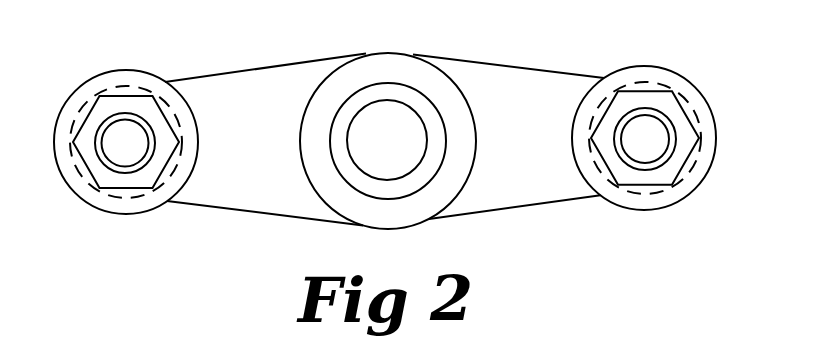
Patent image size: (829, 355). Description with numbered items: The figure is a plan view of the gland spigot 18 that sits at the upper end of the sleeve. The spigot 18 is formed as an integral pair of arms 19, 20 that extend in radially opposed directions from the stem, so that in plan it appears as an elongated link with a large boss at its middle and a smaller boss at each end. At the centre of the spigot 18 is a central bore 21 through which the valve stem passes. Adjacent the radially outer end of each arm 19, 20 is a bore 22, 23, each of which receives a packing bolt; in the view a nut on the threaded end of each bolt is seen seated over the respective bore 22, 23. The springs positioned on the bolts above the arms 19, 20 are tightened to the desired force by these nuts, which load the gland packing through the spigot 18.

The gland spigot 18 is at (528, 56).
The arm 19 is at (543, 180).
The arm 20 is at (267, 183).
The central bore 21 is at (380, 133).
The bore 22 is at (112, 128).
The bore 23 is at (650, 128).